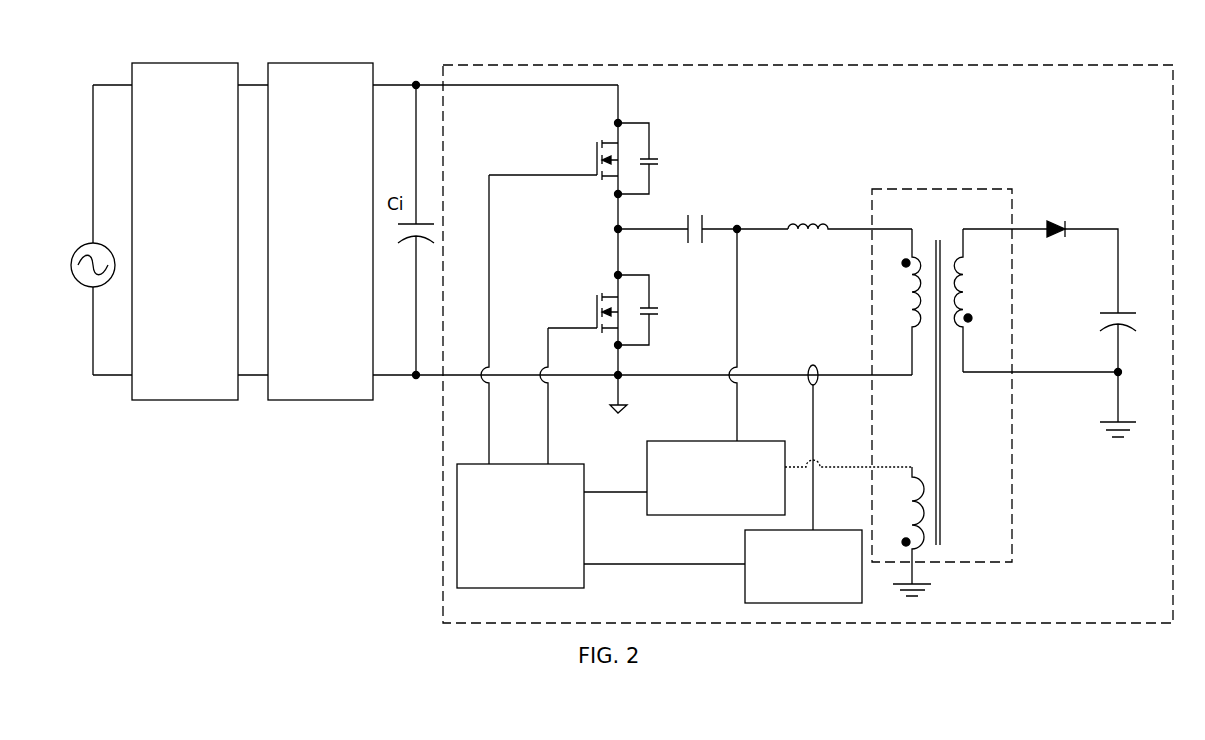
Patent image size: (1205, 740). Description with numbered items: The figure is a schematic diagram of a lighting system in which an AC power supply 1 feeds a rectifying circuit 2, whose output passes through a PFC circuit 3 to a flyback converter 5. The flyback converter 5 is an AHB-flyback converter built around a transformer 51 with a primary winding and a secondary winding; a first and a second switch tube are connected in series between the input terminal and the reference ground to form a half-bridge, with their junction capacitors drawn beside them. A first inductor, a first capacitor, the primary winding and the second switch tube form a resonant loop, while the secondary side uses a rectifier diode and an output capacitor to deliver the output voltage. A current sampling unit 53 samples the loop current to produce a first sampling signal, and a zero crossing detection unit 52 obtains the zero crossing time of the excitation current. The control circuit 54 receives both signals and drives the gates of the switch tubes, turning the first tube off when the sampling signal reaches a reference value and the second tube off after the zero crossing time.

The AC power supply 1 is at (80, 249).
The rectifying circuit 2 is at (185, 231).
The PFC circuit 3 is at (320, 231).
The flyback converter 5 is at (723, 69).
The transformer 51 is at (928, 191).
The zero crossing detection unit 52 is at (716, 478).
The current sampling unit 53 is at (803, 566).
The control circuit 54 is at (520, 526).